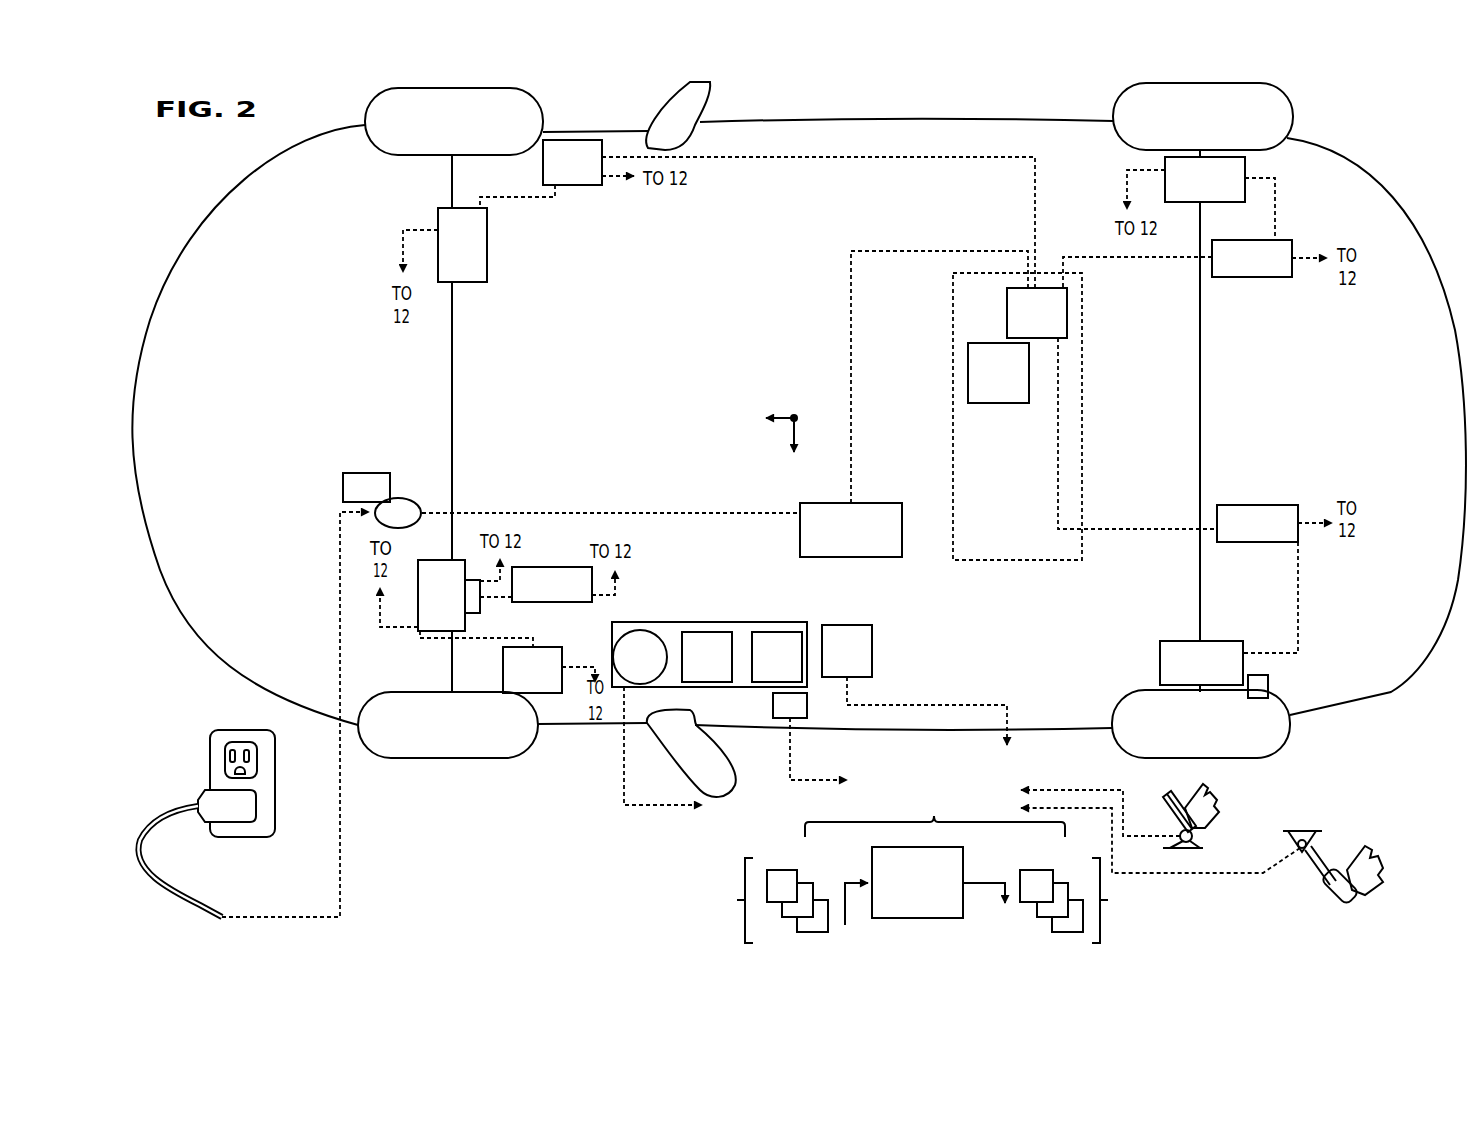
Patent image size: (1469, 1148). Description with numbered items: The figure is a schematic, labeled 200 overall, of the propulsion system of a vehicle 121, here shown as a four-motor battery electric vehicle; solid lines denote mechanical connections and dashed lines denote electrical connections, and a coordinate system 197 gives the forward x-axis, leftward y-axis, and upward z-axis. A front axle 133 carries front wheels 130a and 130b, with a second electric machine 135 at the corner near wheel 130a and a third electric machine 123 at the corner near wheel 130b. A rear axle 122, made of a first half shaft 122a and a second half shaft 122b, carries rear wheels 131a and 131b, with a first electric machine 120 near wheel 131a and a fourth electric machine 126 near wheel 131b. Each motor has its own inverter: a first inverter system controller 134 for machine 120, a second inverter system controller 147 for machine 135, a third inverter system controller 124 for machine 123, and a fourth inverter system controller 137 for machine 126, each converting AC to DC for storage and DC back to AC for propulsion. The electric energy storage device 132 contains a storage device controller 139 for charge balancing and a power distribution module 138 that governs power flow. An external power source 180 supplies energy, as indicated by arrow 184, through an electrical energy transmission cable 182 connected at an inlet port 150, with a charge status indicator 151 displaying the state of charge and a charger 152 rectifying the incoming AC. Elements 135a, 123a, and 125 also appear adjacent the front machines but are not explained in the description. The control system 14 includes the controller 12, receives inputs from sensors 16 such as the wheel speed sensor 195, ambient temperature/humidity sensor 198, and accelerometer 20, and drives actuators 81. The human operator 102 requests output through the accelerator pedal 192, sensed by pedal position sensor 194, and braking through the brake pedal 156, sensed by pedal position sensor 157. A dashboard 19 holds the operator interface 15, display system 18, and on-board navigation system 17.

The vehicle 200 is at (946, 96).
The vehicle 121 is at (1405, 712).
The front wheel 130a is at (468, 88).
The rear wheel 131a is at (1242, 83).
The front wheel 130b is at (445, 758).
The rear wheel 131b is at (1240, 758).
The front axle 133 is at (452, 397).
The rear axle 122 is at (1203, 360).
The first half shaft 122a is at (1202, 233).
The second half shaft 122b is at (1202, 630).
The second inverter system controller 147 is at (590, 175).
The second electric machine 135 is at (477, 258).
The motor connection 135a is at (517, 206).
The first electric machine 120 is at (1220, 190).
The first inverter system controller 134 is at (1268, 268).
The electric energy storage device 132 is at (1033, 471).
The power distribution module 138 is at (1052, 328).
The electric energy storage device controller 139 is at (998, 373).
The charger 152 is at (914, 404).
The coordinate system 197 is at (800, 432).
The fourth inverter system controller 137 is at (1273, 535).
The fourth electric machine 126 is at (1215, 675).
The wheel speed sensor 195 is at (1258, 675).
The charge status indicator 151 is at (382, 498).
The inlet port 150 is at (400, 498).
The third electric machine 123 is at (457, 608).
The transmission coupler 123a is at (482, 613).
The module 125 is at (567, 595).
The third inverter system controller 124 is at (548, 683).
The dashboard 19 is at (740, 622).
The operator interface 15 is at (653, 666).
The display system 18 is at (718, 666).
The on-board navigation system 17 is at (788, 666).
The ambient temperature/humidity sensor 198 is at (863, 661).
The accelerometer 20 is at (800, 718).
The control system 14 is at (935, 804).
The controller 12 is at (925, 886).
The sensors 16 is at (746, 900).
The actuators 81 is at (1105, 900).
The pedal 192 is at (1177, 832).
The pedal position sensor 194 is at (1194, 836).
The human operator 102 is at (1200, 805).
The pedal position sensor 157 is at (1297, 845).
The brake pedal 156 is at (1325, 893).
The power source 180 is at (210, 762).
The electrical energy transmission cable 182 is at (148, 828).
The arrow 184 is at (272, 916).